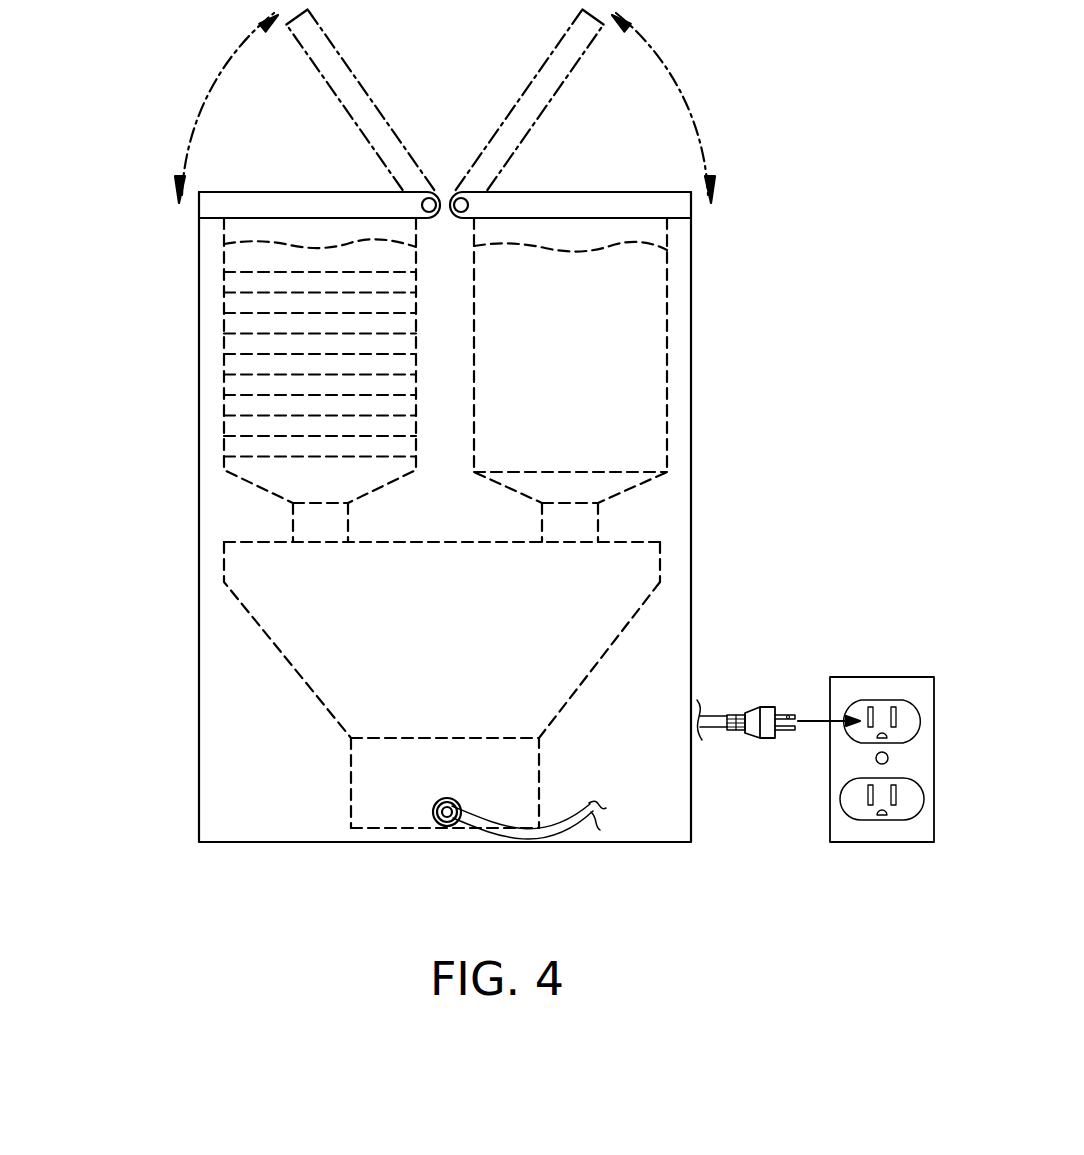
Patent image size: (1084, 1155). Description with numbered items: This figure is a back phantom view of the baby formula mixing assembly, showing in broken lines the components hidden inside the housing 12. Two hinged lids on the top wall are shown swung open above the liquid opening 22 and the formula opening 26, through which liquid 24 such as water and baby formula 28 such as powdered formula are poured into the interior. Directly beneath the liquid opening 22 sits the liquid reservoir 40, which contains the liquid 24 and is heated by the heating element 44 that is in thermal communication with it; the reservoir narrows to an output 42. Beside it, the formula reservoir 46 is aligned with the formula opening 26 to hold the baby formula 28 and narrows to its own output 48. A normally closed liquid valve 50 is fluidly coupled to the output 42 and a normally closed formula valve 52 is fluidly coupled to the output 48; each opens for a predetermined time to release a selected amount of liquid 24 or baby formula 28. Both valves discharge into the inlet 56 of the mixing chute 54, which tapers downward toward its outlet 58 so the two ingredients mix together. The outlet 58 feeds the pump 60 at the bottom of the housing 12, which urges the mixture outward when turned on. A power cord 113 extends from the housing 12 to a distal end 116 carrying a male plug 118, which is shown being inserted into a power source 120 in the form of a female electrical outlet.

The housing 12 is at (199, 308).
The liquid opening 22 is at (277, 243).
The liquid 24 is at (322, 245).
The formula opening 26 is at (558, 212).
The baby formula 28 is at (612, 245).
The liquid reservoir 40 is at (224, 385).
The output 42 is at (322, 505).
The heating element 44 is at (245, 354).
The formula reservoir 46 is at (667, 322).
The output 48 is at (597, 535).
The liquid valve 50 is at (293, 523).
The formula valve 52 is at (600, 503).
The mixing chute 54 is at (622, 632).
The inlet 56 is at (490, 540).
The outlet 58 is at (380, 740).
The pump 60 is at (390, 842).
The power cord 113 is at (575, 818).
The distal end 116 is at (738, 732).
The male plug 118 is at (765, 708).
The power source 120 is at (878, 677).